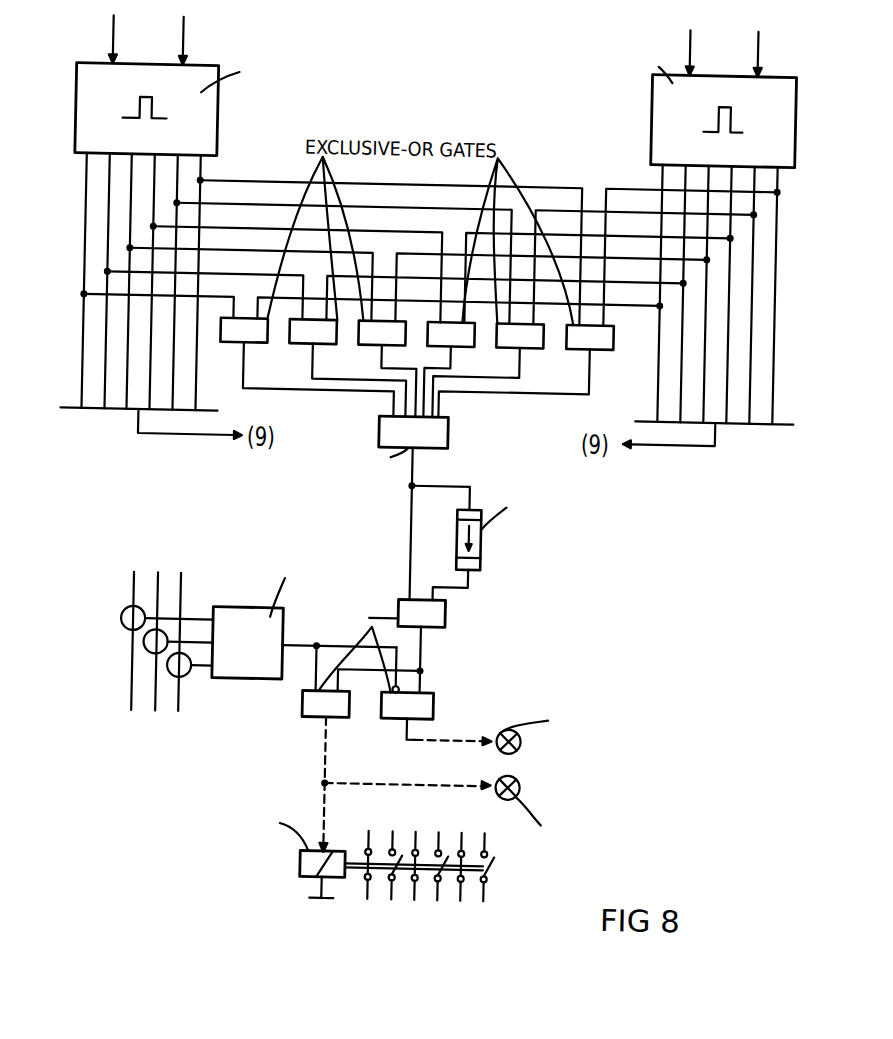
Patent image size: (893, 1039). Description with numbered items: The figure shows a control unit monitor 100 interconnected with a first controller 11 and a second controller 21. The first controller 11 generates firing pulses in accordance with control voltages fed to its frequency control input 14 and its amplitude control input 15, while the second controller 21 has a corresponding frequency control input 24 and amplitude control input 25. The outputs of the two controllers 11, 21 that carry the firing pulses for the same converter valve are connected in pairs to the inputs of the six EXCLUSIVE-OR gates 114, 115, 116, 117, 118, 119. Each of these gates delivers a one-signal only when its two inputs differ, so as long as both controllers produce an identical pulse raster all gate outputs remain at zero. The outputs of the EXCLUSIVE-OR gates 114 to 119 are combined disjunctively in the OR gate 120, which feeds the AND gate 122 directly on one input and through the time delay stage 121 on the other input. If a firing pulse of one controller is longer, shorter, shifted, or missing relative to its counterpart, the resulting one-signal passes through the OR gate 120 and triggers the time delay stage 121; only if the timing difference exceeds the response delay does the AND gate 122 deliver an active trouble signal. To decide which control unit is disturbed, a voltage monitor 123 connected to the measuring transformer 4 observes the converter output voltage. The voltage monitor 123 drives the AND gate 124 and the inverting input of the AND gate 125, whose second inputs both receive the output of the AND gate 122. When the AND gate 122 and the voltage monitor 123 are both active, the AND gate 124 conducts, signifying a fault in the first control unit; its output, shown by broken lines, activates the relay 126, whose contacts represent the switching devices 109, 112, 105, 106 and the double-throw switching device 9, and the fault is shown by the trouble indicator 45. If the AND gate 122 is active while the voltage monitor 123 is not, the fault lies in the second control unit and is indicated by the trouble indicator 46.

The first controller 11 is at (220, 96).
The frequency control input 14 is at (114, 28).
The amplitude control input 15 is at (184, 28).
The second controller 21 is at (654, 97).
The frequency control input 24 is at (691, 30).
The amplitude control input 25 is at (759, 30).
The EXCLUSIVE-OR gate 114 is at (246, 337).
The EXCLUSIVE-OR gate 115 is at (314, 337).
The EXCLUSIVE-OR gate 116 is at (382, 337).
The EXCLUSIVE-OR gate 117 is at (465, 337).
The EXCLUSIVE-OR gate 118 is at (534, 337).
The EXCLUSIVE-OR gate 119 is at (604, 337).
The OR gate 120 is at (457, 424).
The time delay stage 121 is at (492, 533).
The AND gate 122 is at (458, 606).
The voltage monitor 123 is at (261, 673).
The AND gate 124 is at (335, 710).
The AND gate 125 is at (408, 710).
The relay 126 is at (318, 857).
The monitoring circuit 100 is at (546, 552).
The measuring transformer 4 is at (122, 651).
The double-throw switching device 9 is at (422, 886).
The trouble indicator 46 is at (536, 731).
The trouble indicator 45 is at (536, 777).
The switching device 109 is at (383, 874).
The switching device 112 is at (407, 874).
The switching device 105 is at (430, 874).
The switching device 106 is at (476, 874).